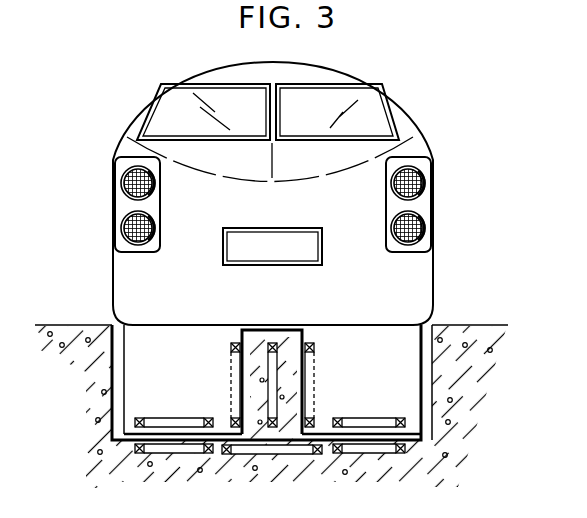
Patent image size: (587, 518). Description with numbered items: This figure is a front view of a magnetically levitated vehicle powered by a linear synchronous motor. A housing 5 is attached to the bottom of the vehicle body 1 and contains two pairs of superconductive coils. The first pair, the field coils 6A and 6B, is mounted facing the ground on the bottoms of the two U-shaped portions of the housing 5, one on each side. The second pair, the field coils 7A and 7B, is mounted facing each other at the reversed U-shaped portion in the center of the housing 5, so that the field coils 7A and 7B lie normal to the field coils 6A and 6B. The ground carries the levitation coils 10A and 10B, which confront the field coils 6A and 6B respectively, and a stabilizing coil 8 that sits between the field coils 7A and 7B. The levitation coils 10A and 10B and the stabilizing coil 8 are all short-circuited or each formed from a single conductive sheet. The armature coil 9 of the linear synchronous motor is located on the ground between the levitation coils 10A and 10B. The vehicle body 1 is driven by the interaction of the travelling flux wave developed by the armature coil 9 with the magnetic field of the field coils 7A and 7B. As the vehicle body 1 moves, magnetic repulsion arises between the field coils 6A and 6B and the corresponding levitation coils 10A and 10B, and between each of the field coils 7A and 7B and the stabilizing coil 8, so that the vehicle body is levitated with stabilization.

The vehicle body 1 is at (430, 148).
The housing 5 is at (412, 395).
The superconductive field coil 6A is at (190, 418).
The superconductive field coil 6B is at (378, 418).
The field coil 7A is at (231, 358).
The field coil 7B is at (314, 362).
The stabilizing coil 8 is at (268, 367).
The armature coil 9 is at (298, 456).
The levitation coil 10A is at (177, 454).
The levitation coil 10B is at (378, 454).